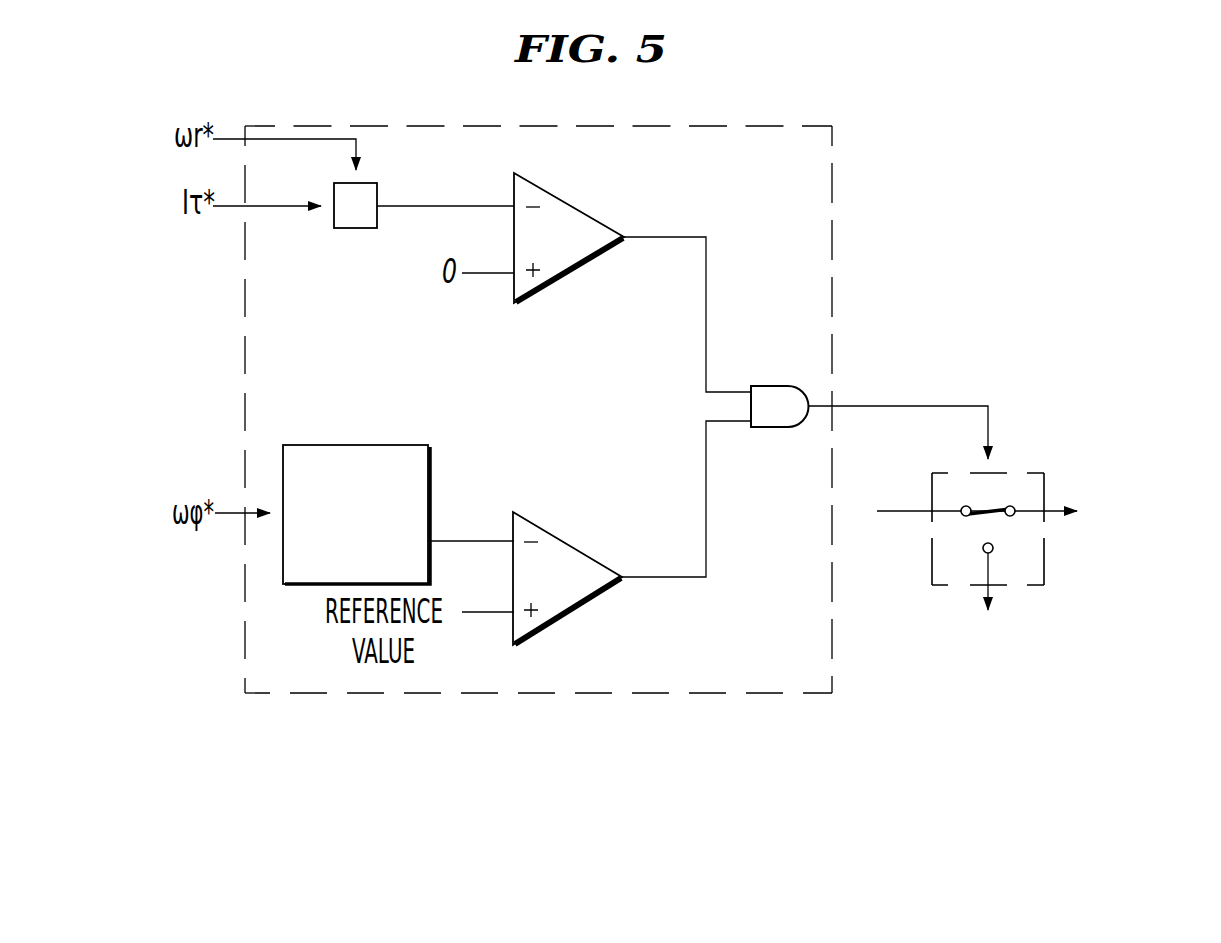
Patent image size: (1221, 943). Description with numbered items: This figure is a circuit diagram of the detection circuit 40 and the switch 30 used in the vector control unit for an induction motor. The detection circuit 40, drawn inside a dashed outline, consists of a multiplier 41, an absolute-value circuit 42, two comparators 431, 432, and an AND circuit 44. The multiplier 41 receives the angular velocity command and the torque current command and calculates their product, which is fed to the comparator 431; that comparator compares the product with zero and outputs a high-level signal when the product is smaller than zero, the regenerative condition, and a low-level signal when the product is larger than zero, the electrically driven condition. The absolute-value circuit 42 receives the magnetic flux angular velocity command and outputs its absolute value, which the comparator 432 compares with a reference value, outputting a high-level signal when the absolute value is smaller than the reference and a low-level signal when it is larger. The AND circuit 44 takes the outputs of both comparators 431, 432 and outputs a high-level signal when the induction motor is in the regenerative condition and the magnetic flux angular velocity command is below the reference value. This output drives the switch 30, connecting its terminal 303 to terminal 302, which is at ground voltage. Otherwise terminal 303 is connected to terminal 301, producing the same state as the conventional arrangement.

The switch 30 is at (1037, 539).
The terminal 301 is at (963, 506).
The terminal 302 is at (993, 551).
The terminal 303 is at (1017, 514).
The detection circuit 40 is at (832, 240).
The multiplier 41 is at (378, 197).
The absolute-value circuit 42 is at (430, 484).
The comparator 431 is at (596, 224).
The comparator 432 is at (565, 607).
The AND circuit 44 is at (775, 388).